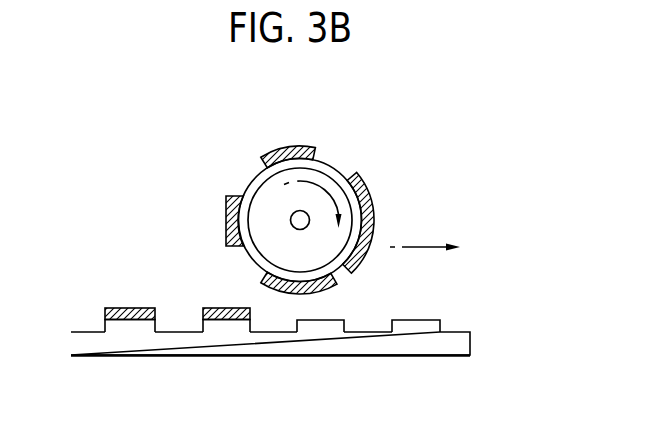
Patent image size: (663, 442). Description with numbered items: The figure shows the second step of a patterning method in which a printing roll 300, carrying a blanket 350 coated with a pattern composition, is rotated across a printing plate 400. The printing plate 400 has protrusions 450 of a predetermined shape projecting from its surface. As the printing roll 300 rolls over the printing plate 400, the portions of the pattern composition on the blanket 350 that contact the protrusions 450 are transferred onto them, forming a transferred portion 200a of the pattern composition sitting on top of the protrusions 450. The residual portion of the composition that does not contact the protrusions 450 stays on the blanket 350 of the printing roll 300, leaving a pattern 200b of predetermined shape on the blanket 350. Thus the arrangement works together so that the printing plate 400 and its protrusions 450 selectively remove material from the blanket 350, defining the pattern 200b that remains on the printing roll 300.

The printing roll 300 is at (265, 199).
The blanket 350 is at (238, 214).
The pattern 200b is at (365, 178).
The portion of the pattern composition 200a is at (130, 317).
The protrusions 450 is at (423, 325).
The printing plate 400 is at (472, 338).